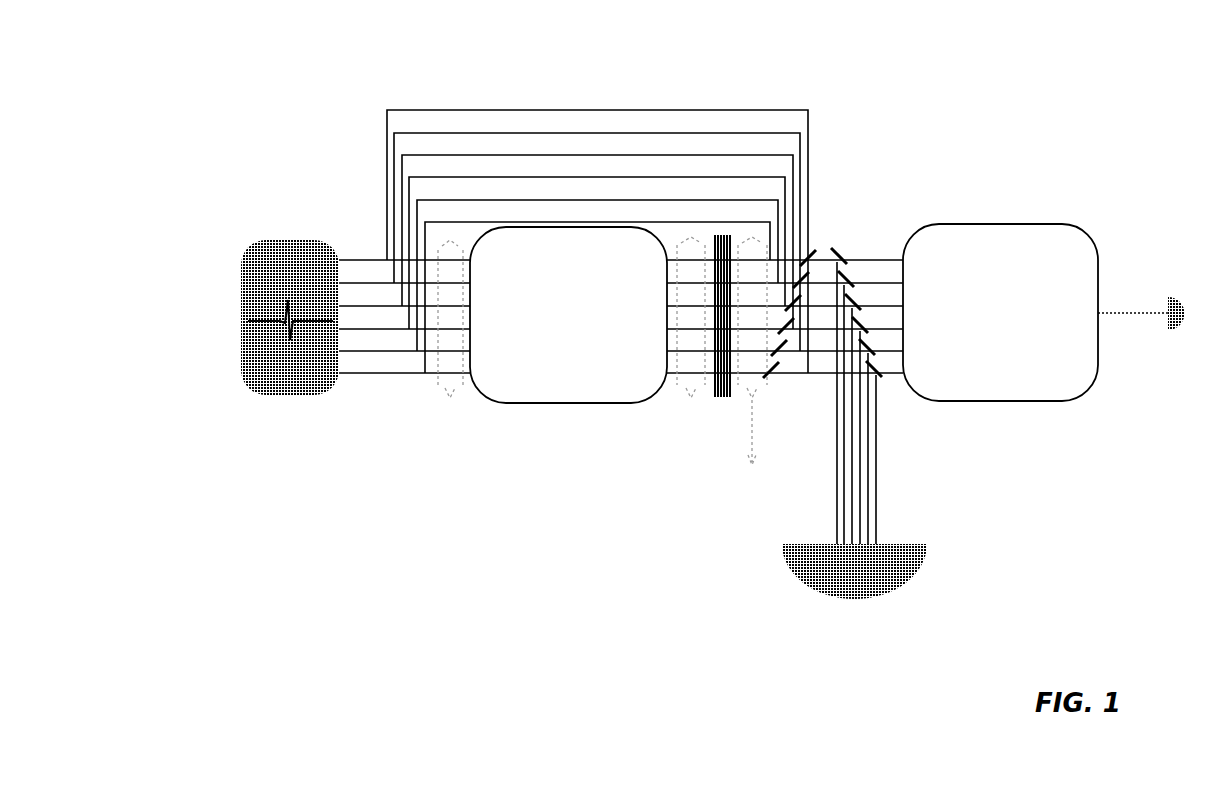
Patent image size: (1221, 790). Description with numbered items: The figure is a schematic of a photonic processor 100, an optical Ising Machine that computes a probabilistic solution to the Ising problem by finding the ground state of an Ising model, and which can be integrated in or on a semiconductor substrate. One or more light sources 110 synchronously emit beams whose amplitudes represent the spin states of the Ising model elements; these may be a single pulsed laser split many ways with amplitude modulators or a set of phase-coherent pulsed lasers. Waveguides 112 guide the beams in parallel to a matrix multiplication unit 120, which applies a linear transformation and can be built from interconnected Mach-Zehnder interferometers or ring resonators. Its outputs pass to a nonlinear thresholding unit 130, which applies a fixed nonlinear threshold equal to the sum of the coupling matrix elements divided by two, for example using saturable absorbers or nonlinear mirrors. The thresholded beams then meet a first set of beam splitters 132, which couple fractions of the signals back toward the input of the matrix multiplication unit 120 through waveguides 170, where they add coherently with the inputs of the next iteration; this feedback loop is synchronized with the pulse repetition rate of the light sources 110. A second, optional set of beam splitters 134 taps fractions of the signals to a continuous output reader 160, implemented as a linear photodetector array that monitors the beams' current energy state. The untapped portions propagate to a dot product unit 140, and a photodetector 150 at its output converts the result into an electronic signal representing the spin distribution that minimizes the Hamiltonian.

The photonic processor 100 is at (1020, 92).
The light sources 110 is at (245, 340).
The waveguides 112 is at (424, 344).
The matrix multiplication unit 120 is at (568, 335).
The nonlinear thresholding unit 130 is at (726, 237).
The first set of beam splitters 132 is at (785, 326).
The second set of beam splitters 134 is at (856, 301).
The dot product unit 140 is at (1000, 333).
The photodetector 150 is at (1143, 356).
The continuous output reader 160 is at (865, 450).
The waveguides 170 is at (597, 222).